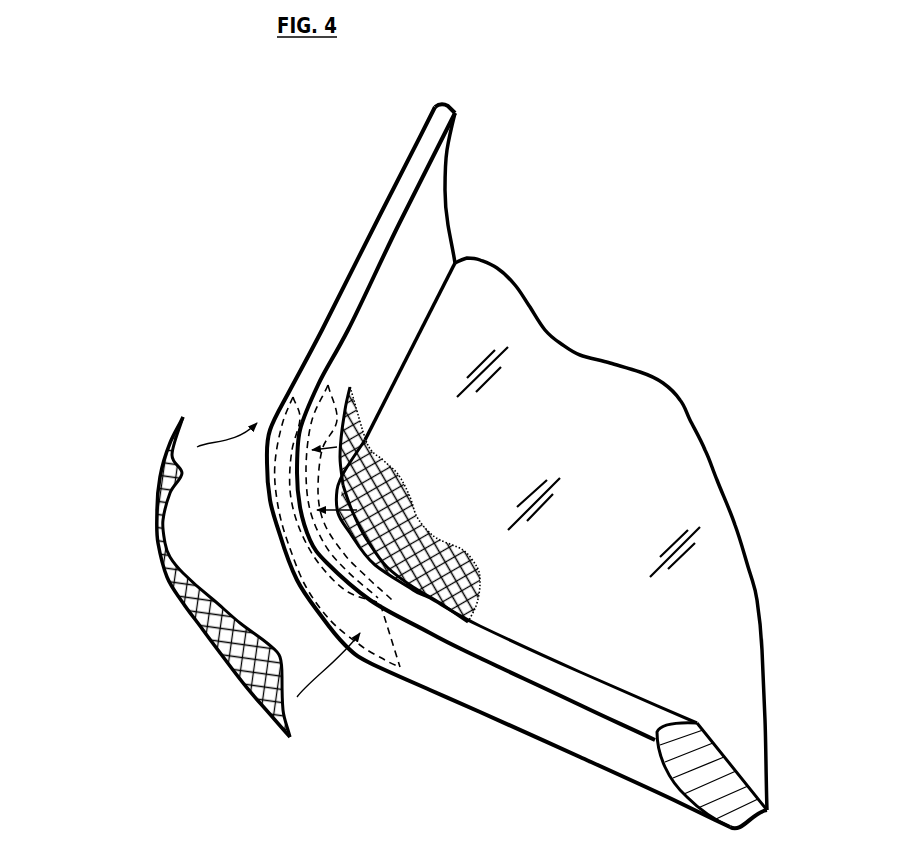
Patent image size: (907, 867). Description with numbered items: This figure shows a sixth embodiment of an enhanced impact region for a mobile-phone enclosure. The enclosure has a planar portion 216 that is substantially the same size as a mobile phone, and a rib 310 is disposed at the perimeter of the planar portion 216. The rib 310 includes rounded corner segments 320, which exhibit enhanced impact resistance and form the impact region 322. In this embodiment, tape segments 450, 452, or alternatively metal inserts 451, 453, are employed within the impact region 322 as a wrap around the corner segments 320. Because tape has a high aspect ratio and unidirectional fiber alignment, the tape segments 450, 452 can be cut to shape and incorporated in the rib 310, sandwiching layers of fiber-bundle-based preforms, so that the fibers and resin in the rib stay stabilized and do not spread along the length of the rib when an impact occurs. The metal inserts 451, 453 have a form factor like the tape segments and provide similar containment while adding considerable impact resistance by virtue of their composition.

The rib 310 is at (293, 282).
The rounded corner segments 320 is at (367, 663).
The impact region 322 is at (757, 330).
The planar portion 216 is at (613, 601).
The tape segment 450 is at (178, 569).
The metal insert 451 is at (155, 478).
The tape segment 452 is at (433, 505).
The metal insert 453 is at (430, 510).